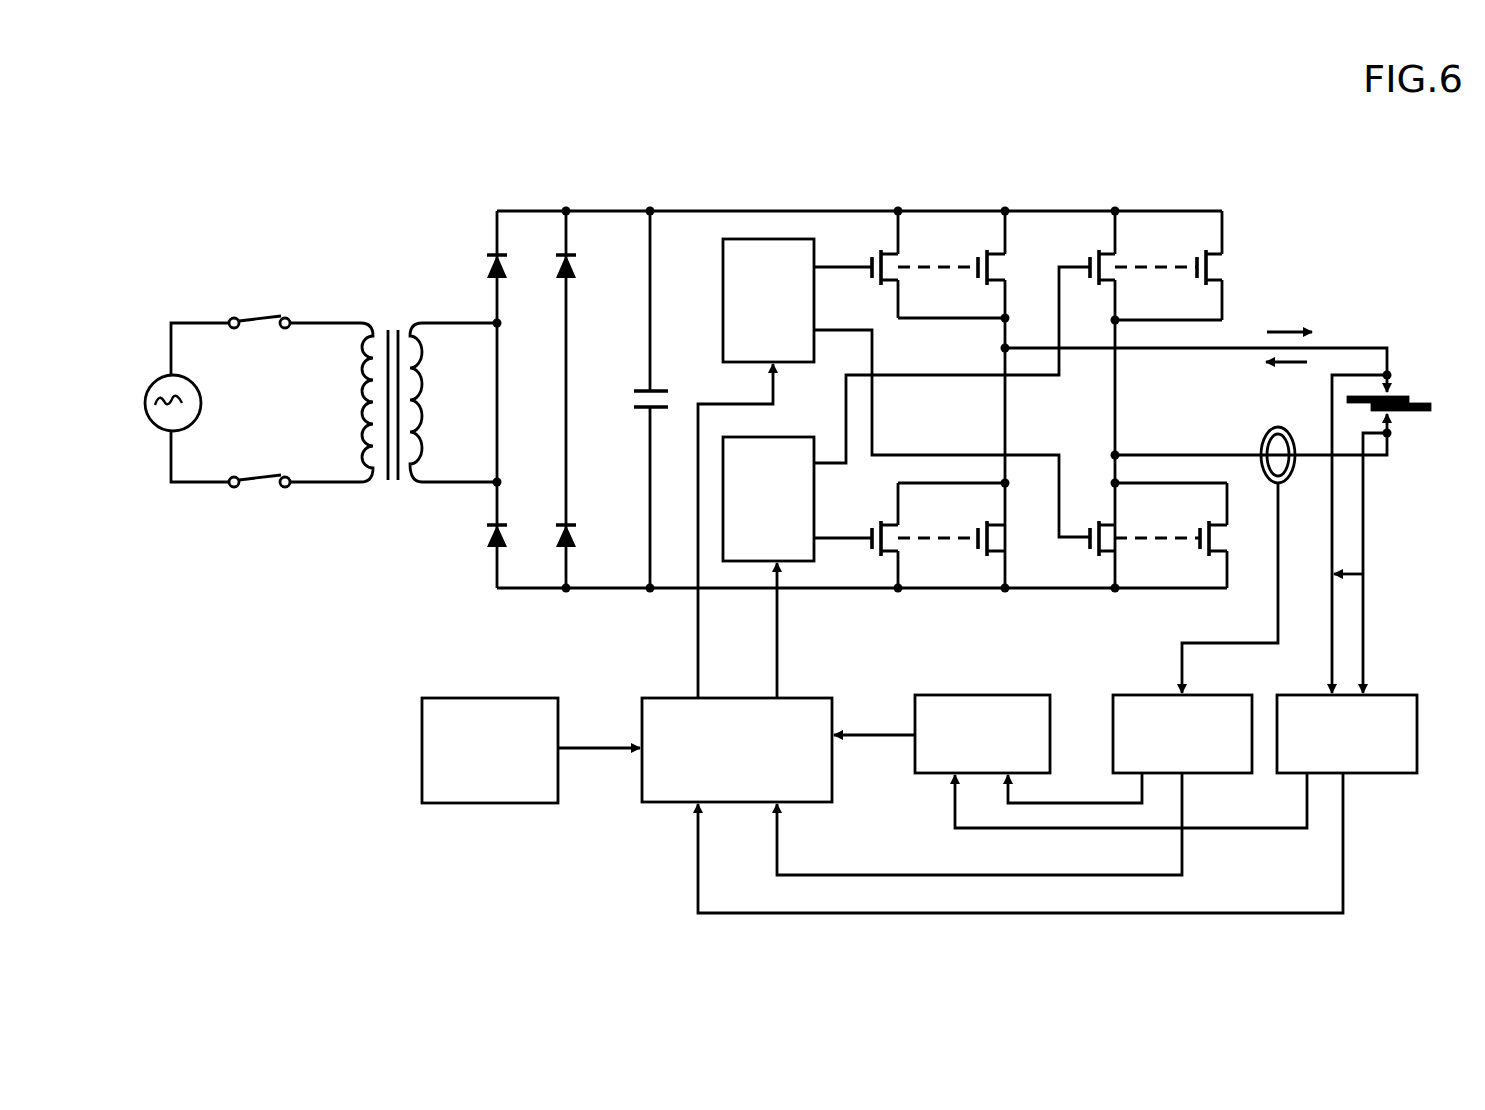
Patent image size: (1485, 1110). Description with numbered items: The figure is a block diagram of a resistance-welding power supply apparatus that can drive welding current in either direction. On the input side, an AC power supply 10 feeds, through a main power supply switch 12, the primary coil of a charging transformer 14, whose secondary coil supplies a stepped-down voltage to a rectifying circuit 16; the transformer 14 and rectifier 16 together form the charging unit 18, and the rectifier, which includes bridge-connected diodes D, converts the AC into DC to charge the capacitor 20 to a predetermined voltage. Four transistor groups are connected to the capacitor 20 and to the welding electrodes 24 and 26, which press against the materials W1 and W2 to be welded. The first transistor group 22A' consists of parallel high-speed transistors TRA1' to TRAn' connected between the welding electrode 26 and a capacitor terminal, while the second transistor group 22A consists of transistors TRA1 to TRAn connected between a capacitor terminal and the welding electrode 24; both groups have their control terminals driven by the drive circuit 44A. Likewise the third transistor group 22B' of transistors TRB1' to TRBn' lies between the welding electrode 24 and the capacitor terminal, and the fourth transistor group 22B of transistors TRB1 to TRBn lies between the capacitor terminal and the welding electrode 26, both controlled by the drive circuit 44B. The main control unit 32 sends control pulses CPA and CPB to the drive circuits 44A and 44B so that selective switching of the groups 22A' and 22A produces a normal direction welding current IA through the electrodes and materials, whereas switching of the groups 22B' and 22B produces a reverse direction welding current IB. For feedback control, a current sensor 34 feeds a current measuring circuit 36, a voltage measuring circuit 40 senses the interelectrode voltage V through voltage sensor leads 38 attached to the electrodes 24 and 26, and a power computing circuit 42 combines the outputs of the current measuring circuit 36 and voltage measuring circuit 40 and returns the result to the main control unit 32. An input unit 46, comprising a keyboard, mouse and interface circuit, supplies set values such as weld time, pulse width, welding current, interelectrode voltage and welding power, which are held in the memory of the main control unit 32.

The AC power supply 10 is at (197, 383).
The main power supply switch 12 is at (262, 307).
The charging transformer 14 is at (393, 318).
The rectifying circuit 16 is at (532, 238).
The charging unit 18 is at (410, 235).
The capacitor 20 is at (630, 398).
The second transistor group 22A is at (924, 342).
The fourth transistor group 22B is at (1196, 353).
The first transistor group 22A' is at (1158, 519).
The third transistor group 22B' is at (931, 522).
The welding electrode 24 is at (1387, 380).
The welding electrode 26 is at (1392, 427).
The main control unit 32 is at (642, 708).
The current sensor 34 is at (1265, 430).
The current measuring circuit 36 is at (1222, 695).
The voltage sensor leads 38 is at (1363, 538).
The voltage measuring circuit 40 is at (1390, 692).
The power computing circuit 42 is at (917, 765).
The drive circuit 44A is at (760, 238).
The drive circuit 44B is at (788, 436).
The input unit 46 is at (422, 720).
The diodes D is at (485, 267).
The material to be welded W1 is at (1408, 397).
The material to be welded W2 is at (1420, 411).
The high-speed transistor TRA1 is at (865, 223).
The high-speed transistor TRAn is at (984, 362).
The high-speed transistor TRB1 is at (1099, 363).
The high-speed transistor TRBn is at (1261, 265).
The high-speed transistor TRA1' is at (1106, 582).
The high-speed transistor TRAn' is at (1210, 561).
The high-speed transistor TRB1' is at (885, 566).
The high-speed transistor TRBn' is at (970, 585).
The control pulse A CPA is at (710, 531).
The control pulse B CPB is at (800, 630).
The normal direction welding current IA is at (1289, 314).
The reverse direction welding current IB is at (1286, 381).
The voltage V is at (1348, 557).